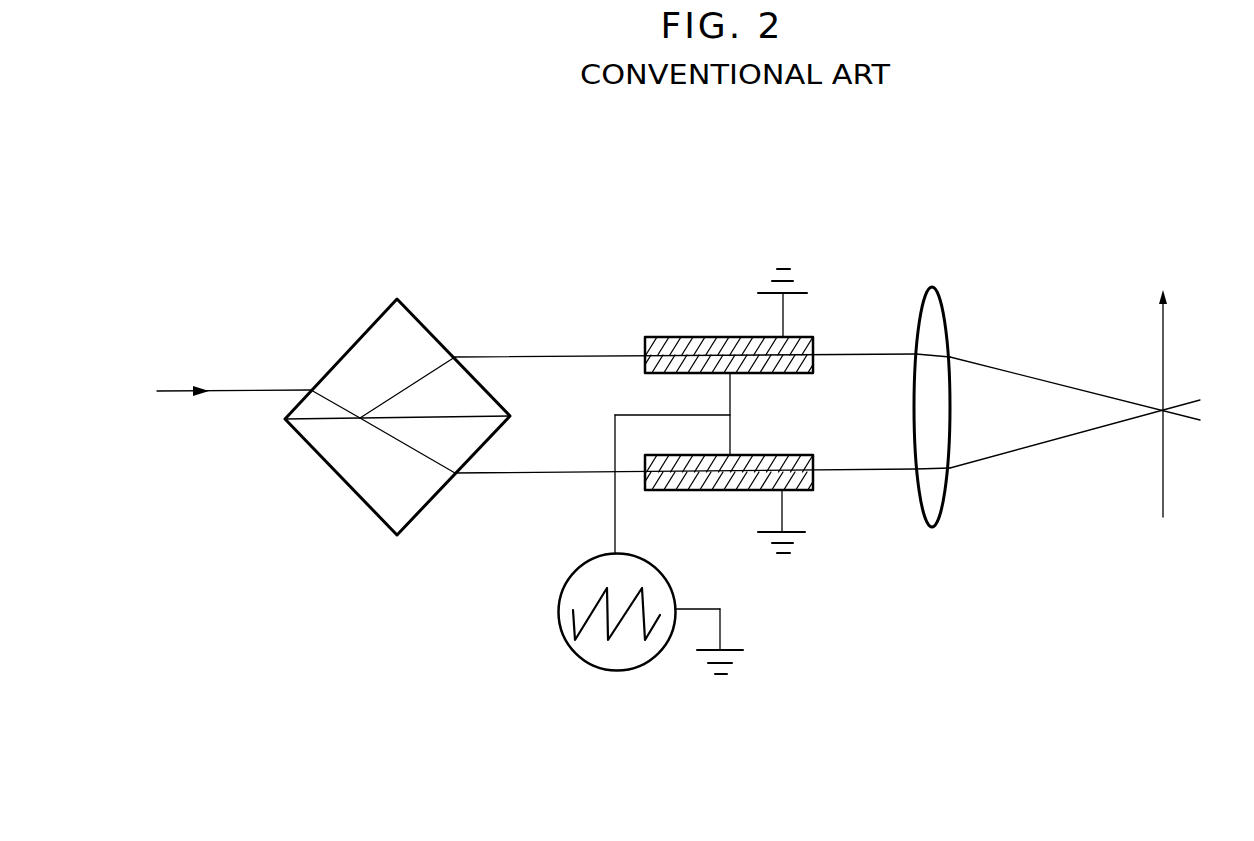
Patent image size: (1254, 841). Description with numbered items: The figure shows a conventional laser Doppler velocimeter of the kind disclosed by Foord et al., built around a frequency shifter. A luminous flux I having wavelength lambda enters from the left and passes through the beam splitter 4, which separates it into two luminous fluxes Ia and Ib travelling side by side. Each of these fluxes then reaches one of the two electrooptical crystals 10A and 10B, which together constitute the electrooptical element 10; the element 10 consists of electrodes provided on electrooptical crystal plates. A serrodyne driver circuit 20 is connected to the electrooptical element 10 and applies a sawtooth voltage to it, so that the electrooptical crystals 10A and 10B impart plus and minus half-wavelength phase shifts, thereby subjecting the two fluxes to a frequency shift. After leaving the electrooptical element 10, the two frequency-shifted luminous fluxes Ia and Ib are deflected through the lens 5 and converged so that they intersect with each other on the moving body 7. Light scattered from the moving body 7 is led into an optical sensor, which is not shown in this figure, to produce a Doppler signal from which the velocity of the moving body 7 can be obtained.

The luminous flux I is at (258, 388).
The luminous flux Ia is at (522, 355).
The luminous flux Ib is at (522, 477).
The beam splitter 4 is at (357, 485).
The lens 5 is at (942, 492).
The moving body 7 is at (1165, 480).
The electrooptical element 10 is at (739, 341).
The electrooptical crystal 10A is at (807, 335).
The electrooptical crystal 10B is at (807, 492).
The serrodyne driver circuit 20 is at (577, 651).